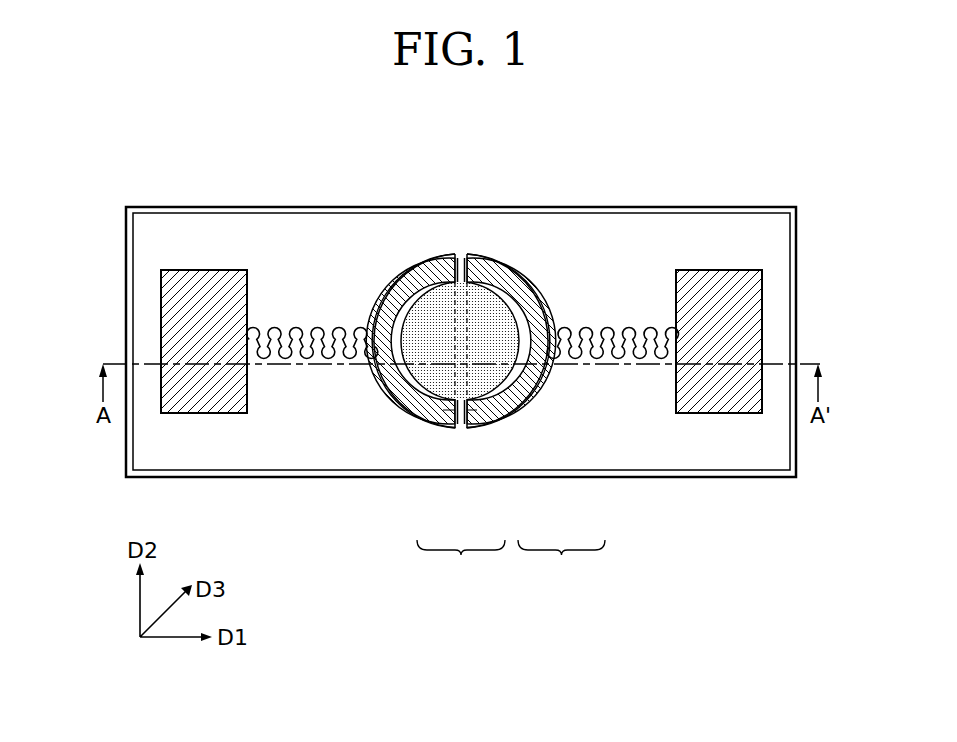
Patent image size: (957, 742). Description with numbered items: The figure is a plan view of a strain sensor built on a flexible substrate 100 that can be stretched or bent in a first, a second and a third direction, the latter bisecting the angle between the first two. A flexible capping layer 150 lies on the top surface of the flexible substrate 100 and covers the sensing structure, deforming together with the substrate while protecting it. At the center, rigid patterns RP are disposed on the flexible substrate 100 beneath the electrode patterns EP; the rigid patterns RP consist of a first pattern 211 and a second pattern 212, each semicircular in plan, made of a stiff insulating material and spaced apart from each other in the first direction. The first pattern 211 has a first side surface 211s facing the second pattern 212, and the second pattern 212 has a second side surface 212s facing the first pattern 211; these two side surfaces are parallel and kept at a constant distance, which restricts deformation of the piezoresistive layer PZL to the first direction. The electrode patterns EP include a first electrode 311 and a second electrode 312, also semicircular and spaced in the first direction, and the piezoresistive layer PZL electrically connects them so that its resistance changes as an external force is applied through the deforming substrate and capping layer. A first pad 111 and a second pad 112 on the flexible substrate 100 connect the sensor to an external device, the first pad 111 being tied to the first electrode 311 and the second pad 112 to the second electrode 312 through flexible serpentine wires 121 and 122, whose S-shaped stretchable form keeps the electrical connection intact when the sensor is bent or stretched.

The flexible substrate 100 is at (796, 243).
The flexible capping layer 150 is at (774, 275).
The first pad 111 is at (174, 308).
The second pad 112 is at (752, 308).
The wire 121 is at (302, 358).
The wire 122 is at (640, 358).
The first pattern 211 is at (438, 425).
The second pattern 212 is at (488, 423).
The first side surface 211s is at (462, 256).
The second side surface 212s is at (468, 254).
The first electrode 311 is at (507, 417).
The second electrode 312 is at (528, 395).
The piezoresistive layer PZL is at (437, 302).
The rigid patterns RP is at (461, 560).
The electrode patterns EP is at (561, 560).